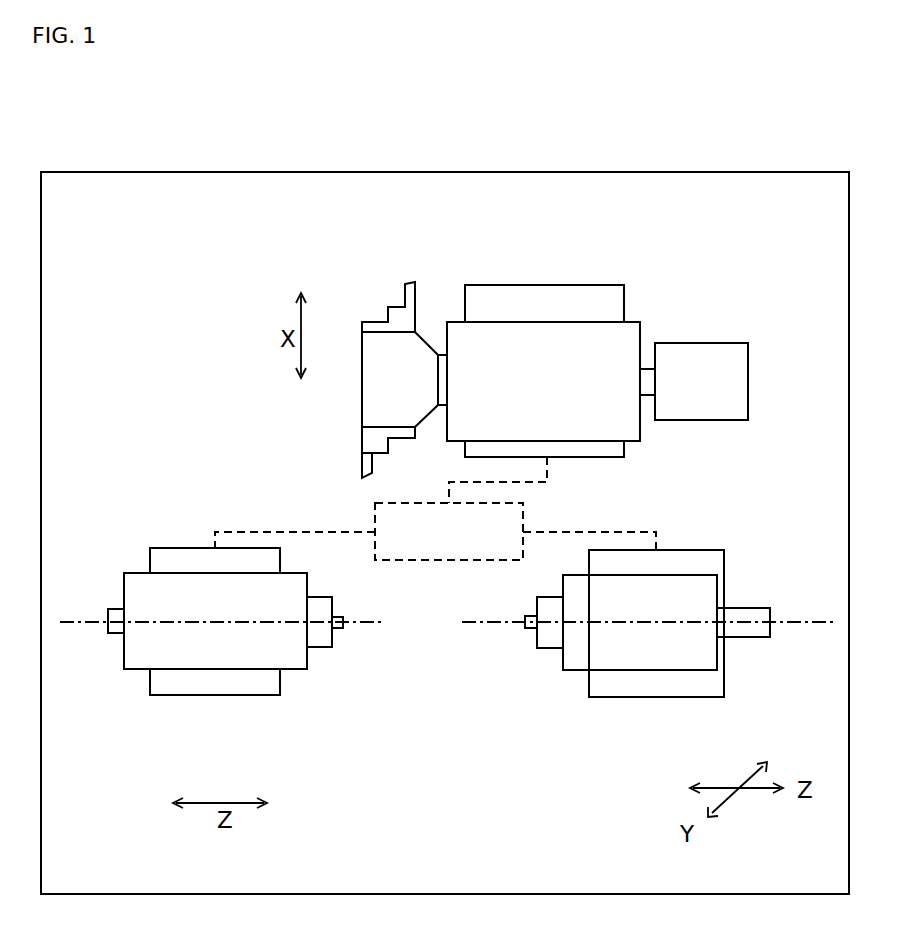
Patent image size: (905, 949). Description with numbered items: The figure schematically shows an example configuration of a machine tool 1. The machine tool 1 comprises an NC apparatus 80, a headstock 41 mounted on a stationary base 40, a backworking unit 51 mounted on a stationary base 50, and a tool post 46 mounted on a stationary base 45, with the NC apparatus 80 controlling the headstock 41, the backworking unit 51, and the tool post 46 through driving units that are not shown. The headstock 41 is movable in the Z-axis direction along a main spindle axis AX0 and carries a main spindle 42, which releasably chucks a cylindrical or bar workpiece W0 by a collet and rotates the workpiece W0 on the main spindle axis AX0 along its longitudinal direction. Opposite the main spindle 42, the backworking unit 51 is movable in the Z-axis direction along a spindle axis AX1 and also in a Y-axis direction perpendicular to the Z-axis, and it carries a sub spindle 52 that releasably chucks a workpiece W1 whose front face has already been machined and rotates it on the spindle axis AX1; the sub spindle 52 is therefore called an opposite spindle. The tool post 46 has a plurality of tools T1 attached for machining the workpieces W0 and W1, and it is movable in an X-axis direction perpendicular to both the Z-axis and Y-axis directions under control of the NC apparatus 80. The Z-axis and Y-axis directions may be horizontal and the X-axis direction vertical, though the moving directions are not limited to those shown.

The machine tool 1 is at (73, 142).
The tool T1 is at (405, 283).
The stationary base 45 is at (503, 285).
The tool post 46 is at (582, 322).
The NC apparatus 80 is at (435, 508).
The stationary base 40 is at (183, 695).
The headstock 41 is at (125, 670).
The main spindle 42 is at (327, 647).
The workpiece W0 is at (343, 623).
The main spindle axis AX0 is at (85, 625).
The stationary base 50 is at (680, 697).
The backworking unit 51 is at (633, 670).
The sub spindle 52 is at (545, 648).
The workpiece W1 is at (525, 622).
The spindle axis AX1 is at (811, 626).